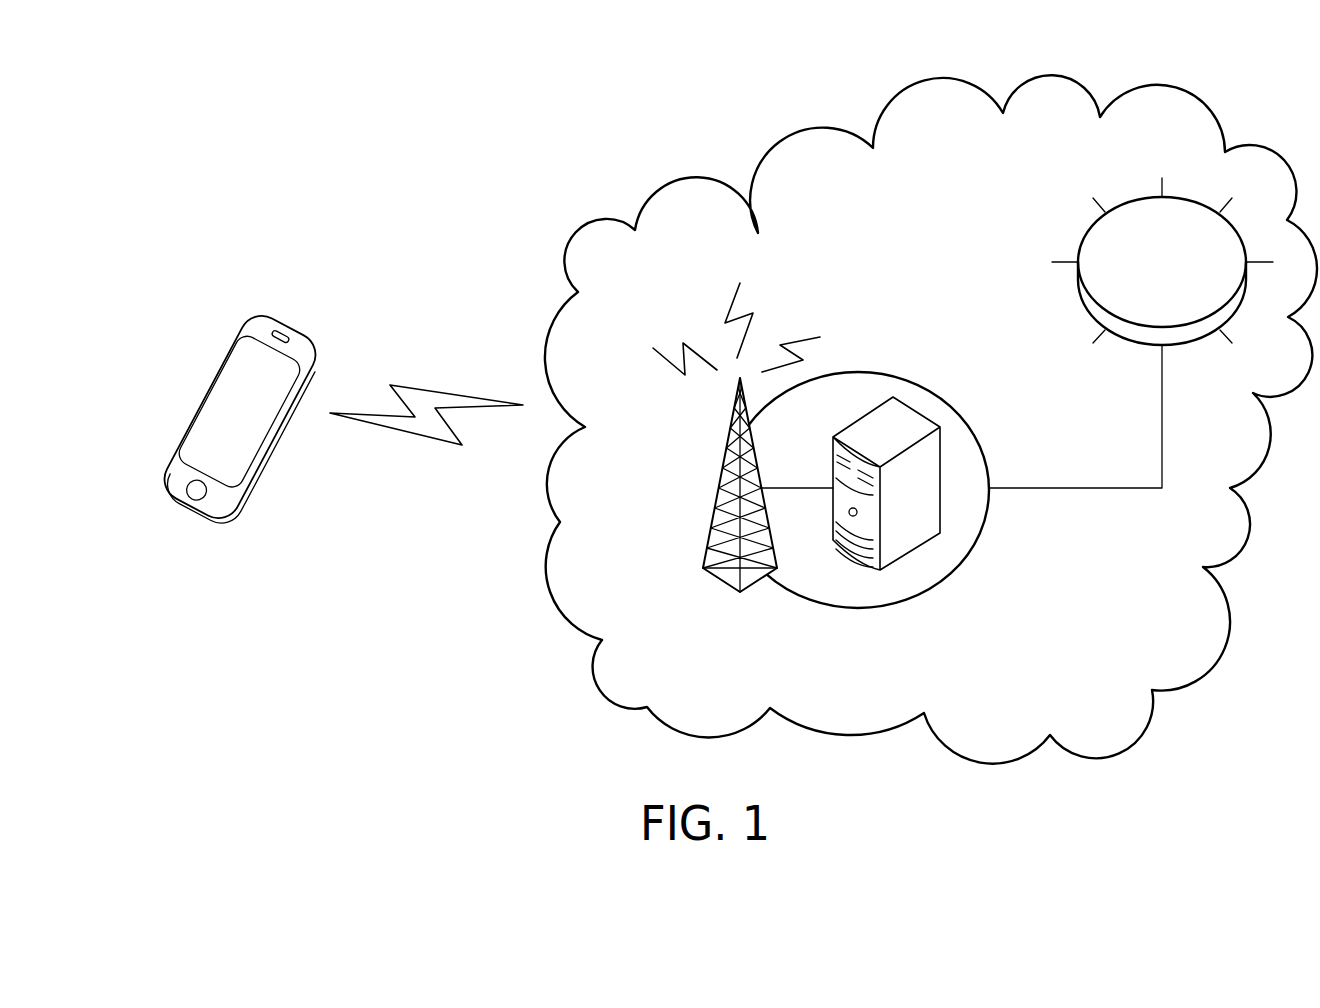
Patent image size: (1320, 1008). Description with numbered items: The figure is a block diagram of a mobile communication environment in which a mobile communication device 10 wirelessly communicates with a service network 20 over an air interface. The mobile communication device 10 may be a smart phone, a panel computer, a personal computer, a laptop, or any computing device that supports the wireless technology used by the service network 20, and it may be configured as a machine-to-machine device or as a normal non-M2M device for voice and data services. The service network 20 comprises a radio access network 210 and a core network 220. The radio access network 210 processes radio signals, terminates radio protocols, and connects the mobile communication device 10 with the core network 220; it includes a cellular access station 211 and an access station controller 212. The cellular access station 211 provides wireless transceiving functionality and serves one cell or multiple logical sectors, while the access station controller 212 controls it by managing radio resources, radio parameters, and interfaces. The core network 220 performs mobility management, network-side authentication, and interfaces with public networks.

The mobile communication device 10 is at (193, 506).
The service network 20 is at (821, 118).
The radio access network 210 is at (950, 573).
The cellular access station 211 is at (718, 490).
The access station controller 212 is at (903, 421).
The core network 220 is at (1088, 232).